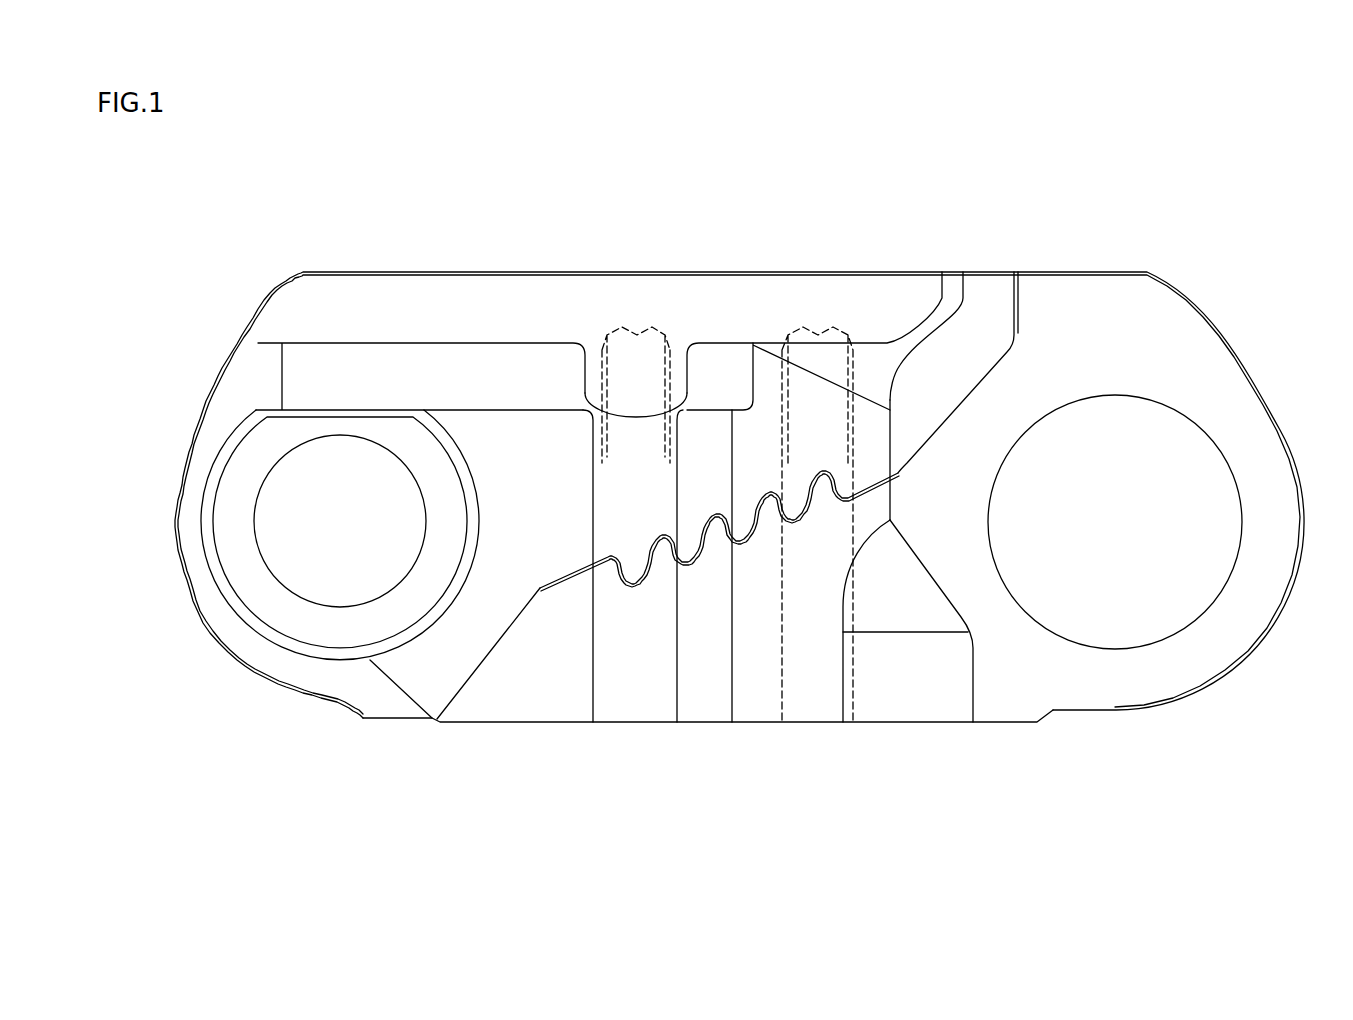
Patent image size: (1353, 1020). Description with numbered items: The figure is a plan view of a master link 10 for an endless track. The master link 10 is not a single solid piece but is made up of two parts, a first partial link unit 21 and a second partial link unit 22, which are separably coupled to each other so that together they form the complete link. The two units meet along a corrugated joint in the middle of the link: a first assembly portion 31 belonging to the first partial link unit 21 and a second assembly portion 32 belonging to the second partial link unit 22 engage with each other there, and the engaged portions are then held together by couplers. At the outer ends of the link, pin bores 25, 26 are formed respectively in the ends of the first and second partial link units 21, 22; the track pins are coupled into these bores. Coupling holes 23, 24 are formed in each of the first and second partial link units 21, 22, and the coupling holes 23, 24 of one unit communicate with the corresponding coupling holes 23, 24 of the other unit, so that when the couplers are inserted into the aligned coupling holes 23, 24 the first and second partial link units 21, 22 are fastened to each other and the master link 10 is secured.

The master link 10 is at (276, 186).
The first partial link unit 21 is at (731, 290).
The second partial link unit 22 is at (913, 710).
The coupling hole 23 is at (618, 376).
The coupling hole 24 is at (843, 378).
The pin bore 25 is at (373, 602).
The pin bore 26 is at (1063, 640).
The first assembly portion 31 is at (719, 632).
The second assembly portion 32 is at (720, 527).